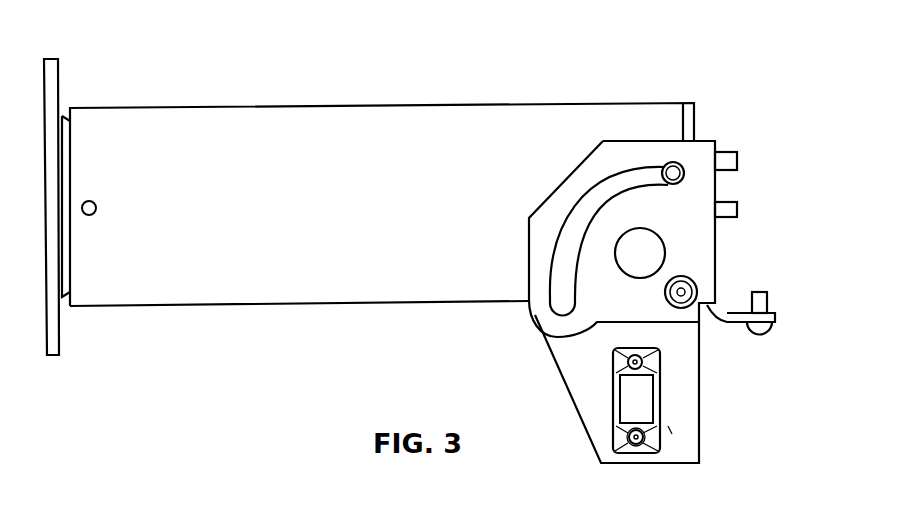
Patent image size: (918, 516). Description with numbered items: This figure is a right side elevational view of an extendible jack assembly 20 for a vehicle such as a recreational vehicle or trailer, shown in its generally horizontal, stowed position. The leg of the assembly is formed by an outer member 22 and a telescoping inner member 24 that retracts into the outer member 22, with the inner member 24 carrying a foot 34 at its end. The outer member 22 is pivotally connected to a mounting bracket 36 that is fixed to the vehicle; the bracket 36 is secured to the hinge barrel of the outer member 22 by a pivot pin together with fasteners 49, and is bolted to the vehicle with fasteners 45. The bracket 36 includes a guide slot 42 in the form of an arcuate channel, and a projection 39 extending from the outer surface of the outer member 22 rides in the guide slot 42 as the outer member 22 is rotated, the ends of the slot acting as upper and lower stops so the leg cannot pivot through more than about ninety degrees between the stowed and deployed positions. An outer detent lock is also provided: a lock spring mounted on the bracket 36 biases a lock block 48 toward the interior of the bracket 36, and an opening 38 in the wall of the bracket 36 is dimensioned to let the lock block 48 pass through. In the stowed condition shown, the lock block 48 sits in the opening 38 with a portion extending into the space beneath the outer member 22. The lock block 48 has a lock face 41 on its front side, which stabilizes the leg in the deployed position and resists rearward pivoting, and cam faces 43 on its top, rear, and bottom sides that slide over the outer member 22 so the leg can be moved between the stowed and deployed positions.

The extendible jack assembly 20 is at (539, 74).
The outer member 22 is at (178, 128).
The inner member 24 is at (60, 115).
The foot 34 is at (54, 69).
The mounting bracket 36 is at (698, 250).
The opening 38 is at (637, 447).
The projection 39 is at (678, 162).
The lock face 41 is at (661, 398).
The guide slot 42 is at (640, 185).
The cam face 43 is at (617, 437).
The fasteners 45 is at (738, 207).
The lock block 48 is at (674, 429).
The fasteners 49 is at (690, 288).